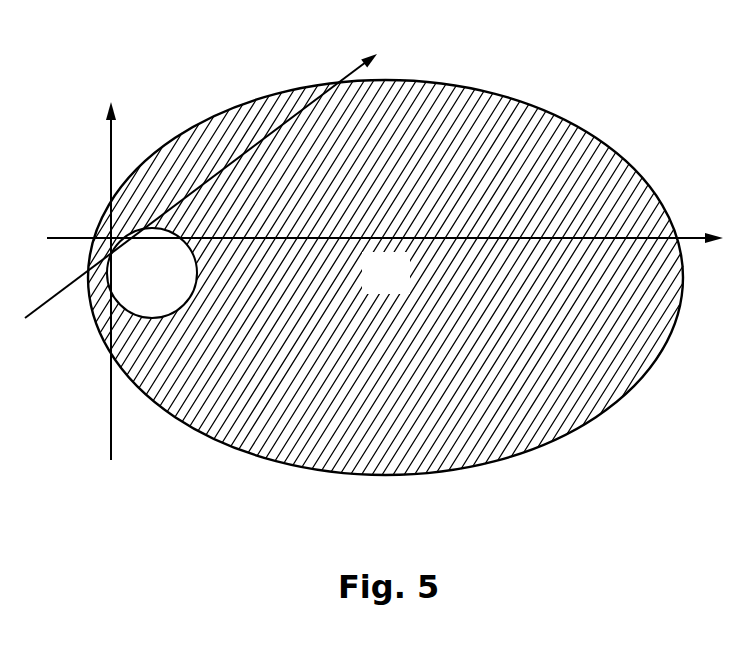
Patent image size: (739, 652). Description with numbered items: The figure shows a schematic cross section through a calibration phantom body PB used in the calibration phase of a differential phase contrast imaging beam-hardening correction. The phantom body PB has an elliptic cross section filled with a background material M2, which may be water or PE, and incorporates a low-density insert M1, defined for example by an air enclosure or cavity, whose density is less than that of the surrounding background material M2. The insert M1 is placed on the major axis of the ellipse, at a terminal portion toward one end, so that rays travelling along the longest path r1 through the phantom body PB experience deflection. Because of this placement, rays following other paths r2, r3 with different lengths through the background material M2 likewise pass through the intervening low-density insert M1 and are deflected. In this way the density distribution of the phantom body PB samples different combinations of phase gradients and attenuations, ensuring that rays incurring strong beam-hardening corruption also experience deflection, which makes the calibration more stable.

The phantom body PB is at (588, 367).
The low-density insert M1 is at (152, 273).
The background material M2 is at (386, 273).
The longest path r1 is at (94, 279).
The ray path r2 is at (199, 215).
The ray path r3 is at (385, 211).